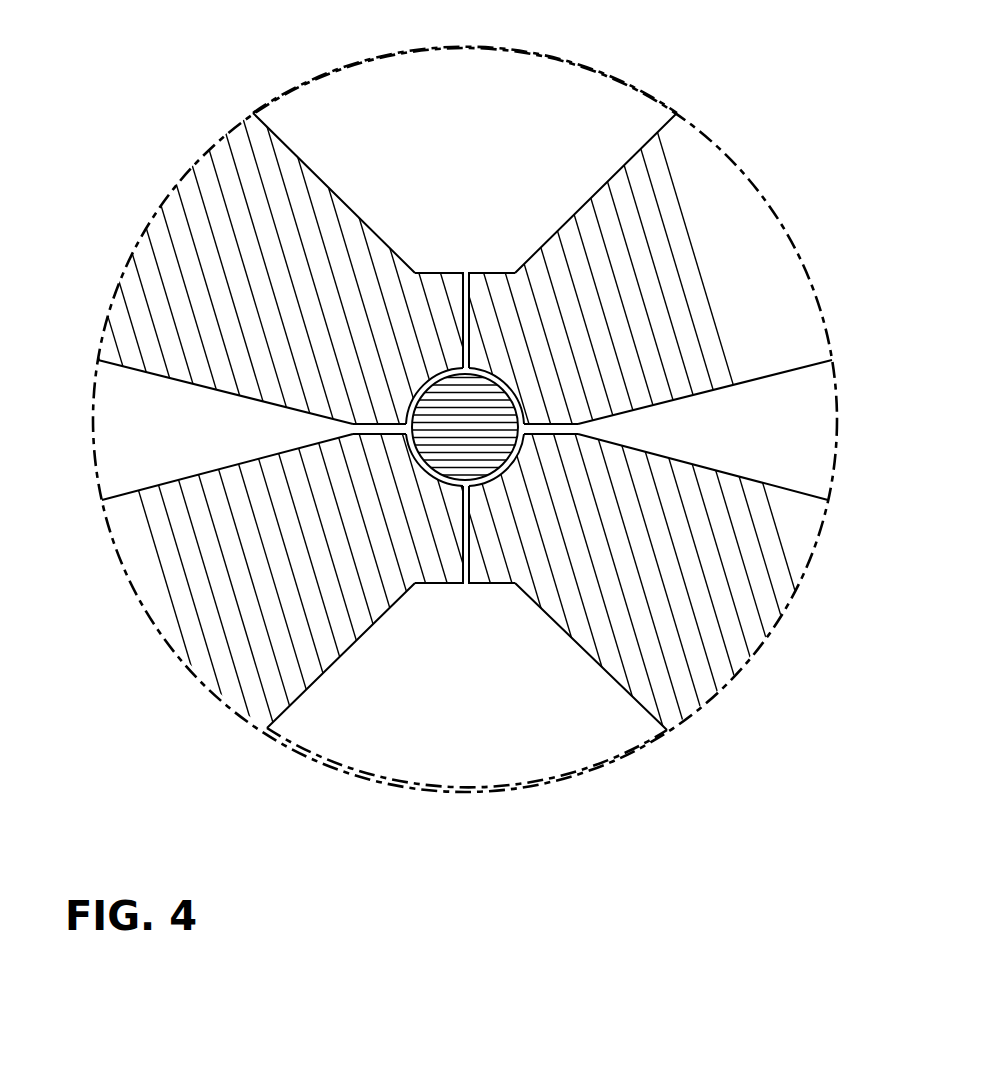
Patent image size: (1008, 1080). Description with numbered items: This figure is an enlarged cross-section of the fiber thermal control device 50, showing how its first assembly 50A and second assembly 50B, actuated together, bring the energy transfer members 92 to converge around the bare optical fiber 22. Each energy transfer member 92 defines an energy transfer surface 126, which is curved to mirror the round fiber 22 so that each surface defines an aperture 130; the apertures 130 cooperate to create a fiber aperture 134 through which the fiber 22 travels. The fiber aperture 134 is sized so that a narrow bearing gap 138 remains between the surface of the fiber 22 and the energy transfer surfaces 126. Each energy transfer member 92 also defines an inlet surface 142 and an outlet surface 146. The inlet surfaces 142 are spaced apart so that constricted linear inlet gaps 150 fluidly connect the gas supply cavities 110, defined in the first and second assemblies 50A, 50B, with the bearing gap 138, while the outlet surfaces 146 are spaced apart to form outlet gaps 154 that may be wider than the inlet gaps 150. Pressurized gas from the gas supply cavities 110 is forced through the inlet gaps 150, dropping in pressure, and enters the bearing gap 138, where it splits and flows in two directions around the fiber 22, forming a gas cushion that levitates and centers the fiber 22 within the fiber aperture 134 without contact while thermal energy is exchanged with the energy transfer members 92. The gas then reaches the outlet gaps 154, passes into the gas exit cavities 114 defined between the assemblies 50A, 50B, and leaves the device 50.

The fiber thermal control device 50 is at (118, 152).
The first assembly 50A is at (522, 92).
The second assembly 50B is at (348, 738).
The energy transfer members 92 is at (240, 193).
The gas supply cavities 110 is at (500, 213).
The gas exit cavities 114 is at (225, 445).
The inlet surface 142 is at (470, 305).
The inlet gaps 150 is at (412, 388).
The fiber aperture 134 is at (458, 351).
The outlet gaps 154 is at (560, 416).
The bearing gap 138 is at (484, 372).
The energy transfer surface 126 is at (458, 492).
The outlet surface 146 is at (425, 490).
The aperture 130 is at (450, 491).
The bare optical fiber 22 is at (478, 398).